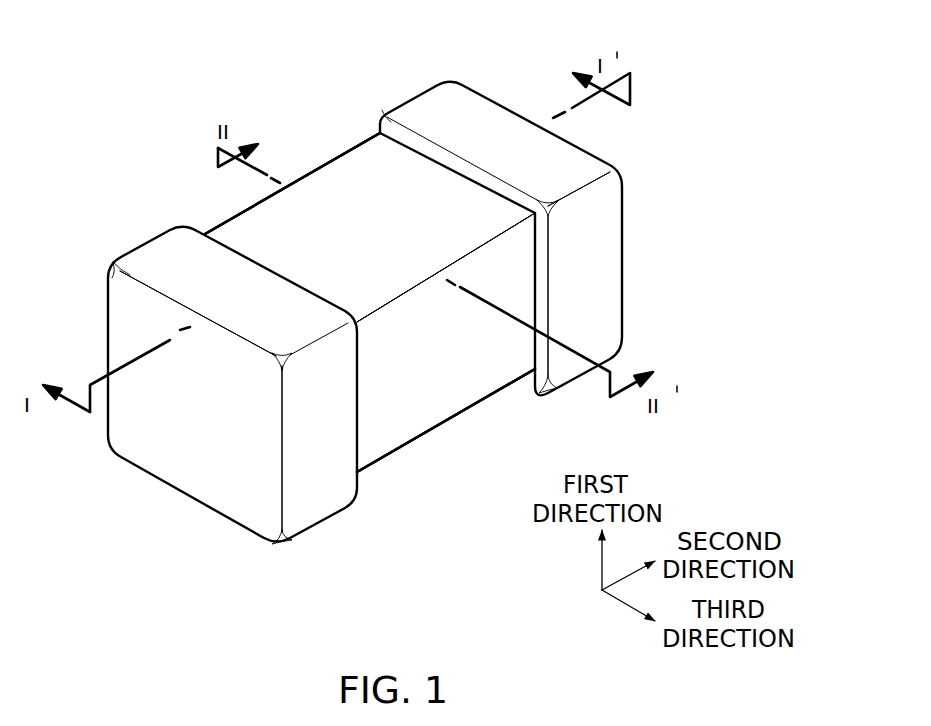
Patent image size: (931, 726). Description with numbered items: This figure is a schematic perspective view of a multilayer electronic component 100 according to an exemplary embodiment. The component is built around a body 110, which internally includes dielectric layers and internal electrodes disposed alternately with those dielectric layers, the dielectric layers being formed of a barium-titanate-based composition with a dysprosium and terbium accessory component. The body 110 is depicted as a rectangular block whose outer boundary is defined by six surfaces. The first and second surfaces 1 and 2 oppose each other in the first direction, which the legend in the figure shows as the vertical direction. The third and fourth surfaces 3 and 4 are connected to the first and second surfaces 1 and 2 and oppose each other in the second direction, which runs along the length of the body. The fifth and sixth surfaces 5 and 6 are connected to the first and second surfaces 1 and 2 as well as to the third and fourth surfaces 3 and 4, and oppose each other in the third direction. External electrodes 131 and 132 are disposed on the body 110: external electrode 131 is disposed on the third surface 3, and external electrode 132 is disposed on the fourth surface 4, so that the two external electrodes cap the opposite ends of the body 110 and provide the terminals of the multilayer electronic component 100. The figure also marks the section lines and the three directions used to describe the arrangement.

The multilayer electronic component 100 is at (157, 43).
The body 110 is at (245, 240).
The external electrode 131 is at (167, 257).
The external electrode 132 is at (422, 112).
The first surface 1 is at (407, 398).
The second surface 2 is at (382, 191).
The third surface 3 is at (203, 441).
The fourth surface 4 is at (571, 248).
The fifth surface 5 is at (329, 213).
The sixth surface 6 is at (463, 366).